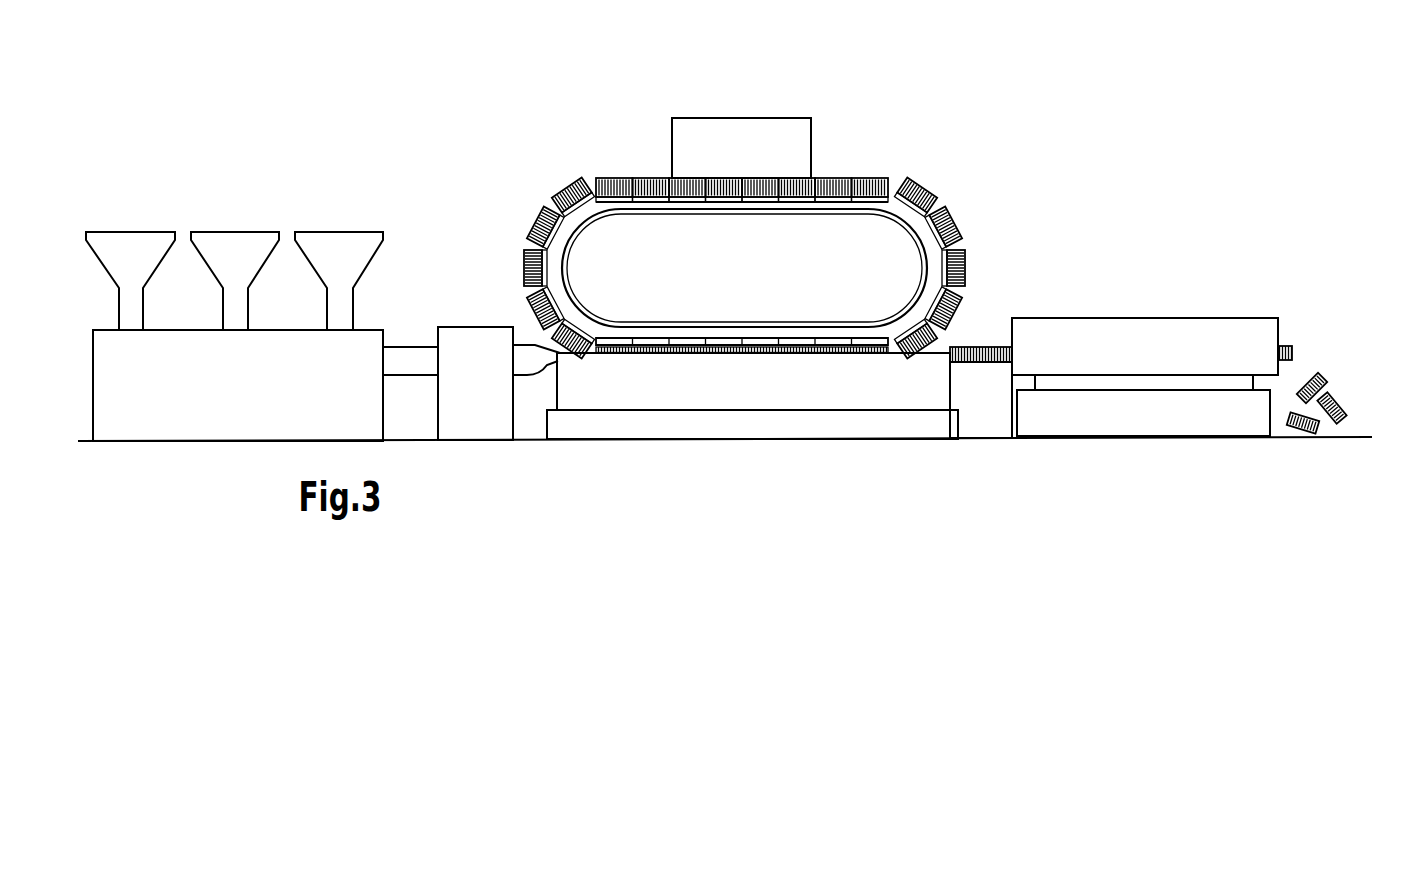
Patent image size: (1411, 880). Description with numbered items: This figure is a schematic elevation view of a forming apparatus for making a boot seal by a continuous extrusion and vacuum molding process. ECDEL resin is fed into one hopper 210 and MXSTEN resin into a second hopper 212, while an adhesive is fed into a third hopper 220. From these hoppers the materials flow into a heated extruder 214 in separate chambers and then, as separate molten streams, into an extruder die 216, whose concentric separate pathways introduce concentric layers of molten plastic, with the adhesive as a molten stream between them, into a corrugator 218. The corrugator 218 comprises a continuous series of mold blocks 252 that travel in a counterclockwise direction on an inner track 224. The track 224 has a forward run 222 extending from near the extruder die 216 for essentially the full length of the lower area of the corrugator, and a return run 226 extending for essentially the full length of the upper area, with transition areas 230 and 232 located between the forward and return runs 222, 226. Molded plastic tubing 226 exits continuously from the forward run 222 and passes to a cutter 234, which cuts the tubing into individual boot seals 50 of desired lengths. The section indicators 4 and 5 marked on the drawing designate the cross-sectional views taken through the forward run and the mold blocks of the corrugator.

The hopper 210 is at (129, 240).
The second hopper 212 is at (240, 245).
The third hopper 220 is at (339, 242).
The heated extruder 214 is at (190, 415).
The extruder die 216 is at (530, 367).
The corrugator 218 is at (633, 128).
The forward run 222 is at (800, 352).
The inner track 224 is at (655, 208).
The return run 226 is at (683, 205).
The transition area 230 is at (988, 262).
The transition area 232 is at (503, 268).
The mold blocks 252 is at (921, 192).
The cutter 234 is at (1170, 333).
The boot seals 50 is at (1342, 366).
The section line 4- 4 is at (723, 317).
The section line 5- 5 is at (833, 163).